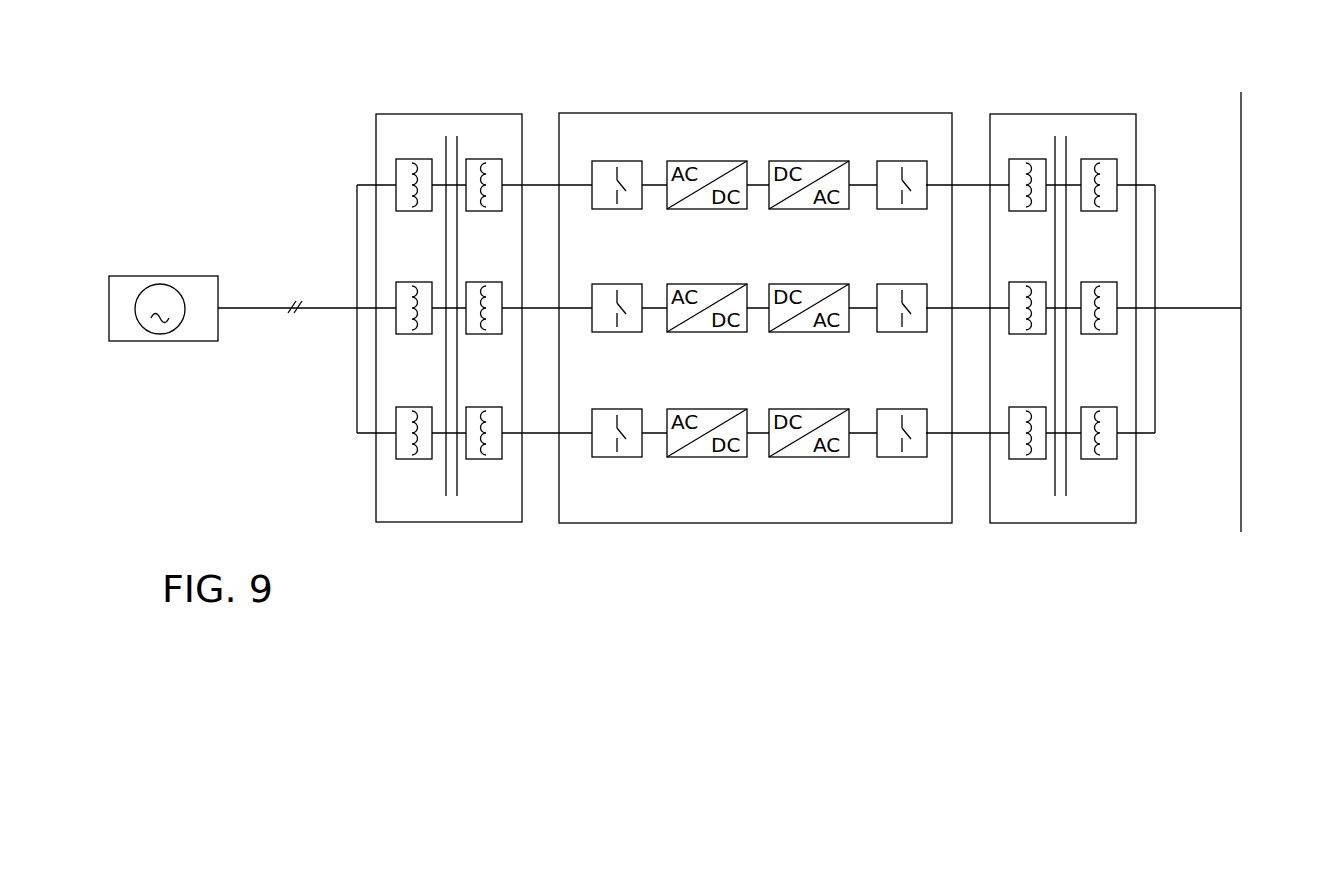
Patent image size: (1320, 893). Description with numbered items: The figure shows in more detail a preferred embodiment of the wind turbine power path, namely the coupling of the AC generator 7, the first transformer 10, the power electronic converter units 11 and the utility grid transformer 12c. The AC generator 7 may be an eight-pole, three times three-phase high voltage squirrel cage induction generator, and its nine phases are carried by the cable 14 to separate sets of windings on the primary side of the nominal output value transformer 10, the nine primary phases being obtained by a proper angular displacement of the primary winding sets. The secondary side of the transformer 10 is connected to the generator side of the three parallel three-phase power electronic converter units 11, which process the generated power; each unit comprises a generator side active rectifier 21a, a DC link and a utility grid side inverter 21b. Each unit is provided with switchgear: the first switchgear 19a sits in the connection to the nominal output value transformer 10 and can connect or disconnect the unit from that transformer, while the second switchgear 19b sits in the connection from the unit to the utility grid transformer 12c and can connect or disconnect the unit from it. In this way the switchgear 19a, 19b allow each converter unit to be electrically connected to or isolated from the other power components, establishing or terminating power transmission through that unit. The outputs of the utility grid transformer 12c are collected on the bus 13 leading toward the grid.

The AC generator 7 is at (188, 276).
The cable 14 is at (263, 308).
The nominal output value transformer 10 is at (477, 114).
The power electronic converter units 11 is at (807, 113).
The utility grid transformer 12c is at (1034, 114).
The bus 13 is at (1241, 163).
The first switchgear 19a is at (628, 161).
The second switchgear 19b is at (888, 161).
The generator side active rectifier 21a is at (695, 209).
The utility grid side inverter 21b is at (805, 209).